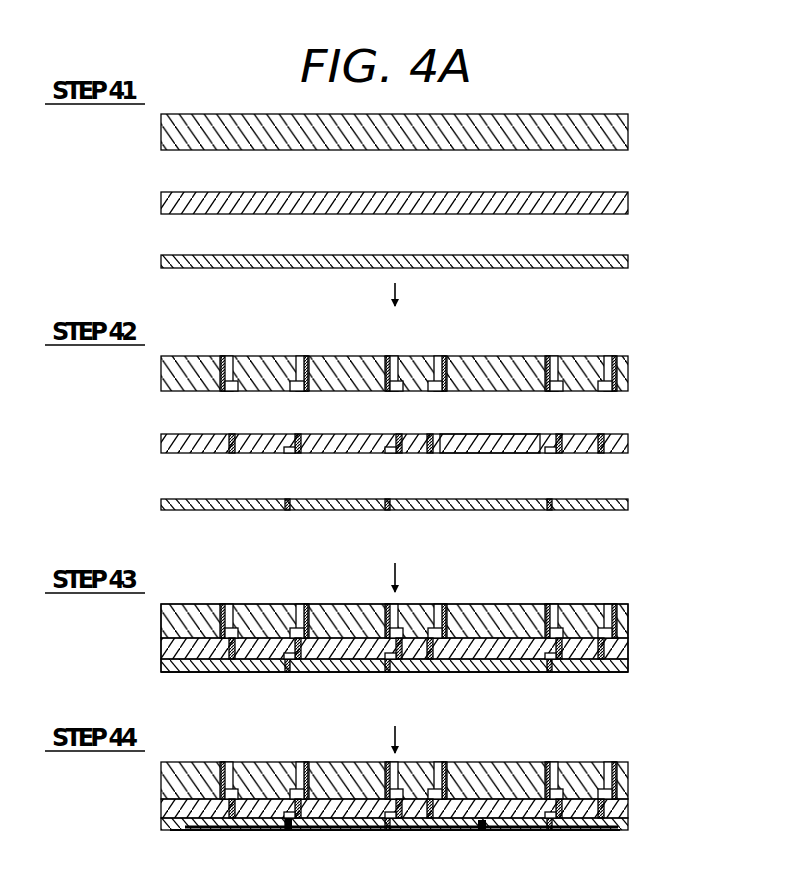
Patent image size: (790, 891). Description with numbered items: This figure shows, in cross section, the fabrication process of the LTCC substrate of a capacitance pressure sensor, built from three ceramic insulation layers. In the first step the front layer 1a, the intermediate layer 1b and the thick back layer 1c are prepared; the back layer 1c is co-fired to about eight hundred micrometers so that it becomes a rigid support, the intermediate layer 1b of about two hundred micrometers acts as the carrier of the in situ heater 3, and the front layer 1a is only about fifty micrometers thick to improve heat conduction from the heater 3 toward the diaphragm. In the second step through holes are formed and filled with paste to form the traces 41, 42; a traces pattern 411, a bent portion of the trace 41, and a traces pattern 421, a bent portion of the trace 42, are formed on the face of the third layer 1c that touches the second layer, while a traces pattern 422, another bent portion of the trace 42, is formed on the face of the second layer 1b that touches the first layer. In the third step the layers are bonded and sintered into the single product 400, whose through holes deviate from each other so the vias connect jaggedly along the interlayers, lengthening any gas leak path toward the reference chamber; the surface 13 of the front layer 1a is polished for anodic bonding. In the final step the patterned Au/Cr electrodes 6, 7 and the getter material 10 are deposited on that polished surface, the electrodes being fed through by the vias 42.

The first insulation layer 1a is at (628, 262).
The second insulation layer 1b is at (628, 203).
The third insulation layer 1c is at (628, 128).
The heater 3 is at (503, 453).
The trace 41 is at (222, 391).
The traces pattern 411 is at (226, 357).
The traces pattern 421 is at (299, 357).
The trace 42 is at (306, 391).
The traces pattern 422 is at (288, 453).
The product 400 is at (636, 589).
The surface 13 is at (478, 672).
The electrode 6 is at (396, 830).
The electrode 7 is at (288, 830).
The getter material 10 is at (522, 830).